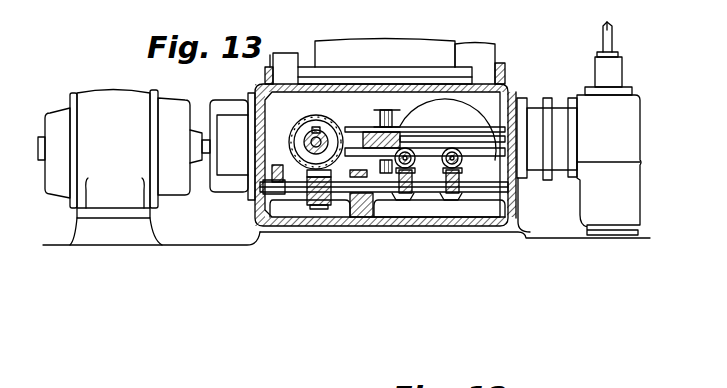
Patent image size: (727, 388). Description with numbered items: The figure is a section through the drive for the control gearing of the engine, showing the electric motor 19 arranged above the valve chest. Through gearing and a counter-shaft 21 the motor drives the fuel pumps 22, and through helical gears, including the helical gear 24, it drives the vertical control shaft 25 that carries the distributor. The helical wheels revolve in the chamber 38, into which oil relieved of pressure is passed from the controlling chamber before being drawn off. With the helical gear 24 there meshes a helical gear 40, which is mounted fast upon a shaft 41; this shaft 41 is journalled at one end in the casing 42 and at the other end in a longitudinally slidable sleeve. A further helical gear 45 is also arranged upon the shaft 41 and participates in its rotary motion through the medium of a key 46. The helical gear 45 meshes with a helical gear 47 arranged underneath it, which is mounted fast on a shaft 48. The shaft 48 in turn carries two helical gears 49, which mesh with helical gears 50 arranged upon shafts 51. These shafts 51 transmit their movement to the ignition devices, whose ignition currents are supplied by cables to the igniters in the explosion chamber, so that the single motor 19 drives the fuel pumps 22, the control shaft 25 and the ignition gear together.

The electric motor 19 is at (149, 168).
The counter-shaft 21 is at (498, 137).
The fuel pumps 22 is at (605, 73).
The helical gear 24 is at (438, 130).
The vertical control shaft 25 is at (383, 113).
The chamber 38 is at (477, 205).
The helical gear 40 is at (335, 125).
The shaft 41 is at (307, 150).
The casing 42 is at (365, 218).
The helical gear 45 is at (299, 123).
The key 46 is at (318, 130).
The helical gear 47 is at (314, 209).
The shaft 48 is at (400, 194).
The helical gears 49 is at (446, 194).
The helical gears 50 is at (413, 173).
The shafts 51 is at (407, 148).